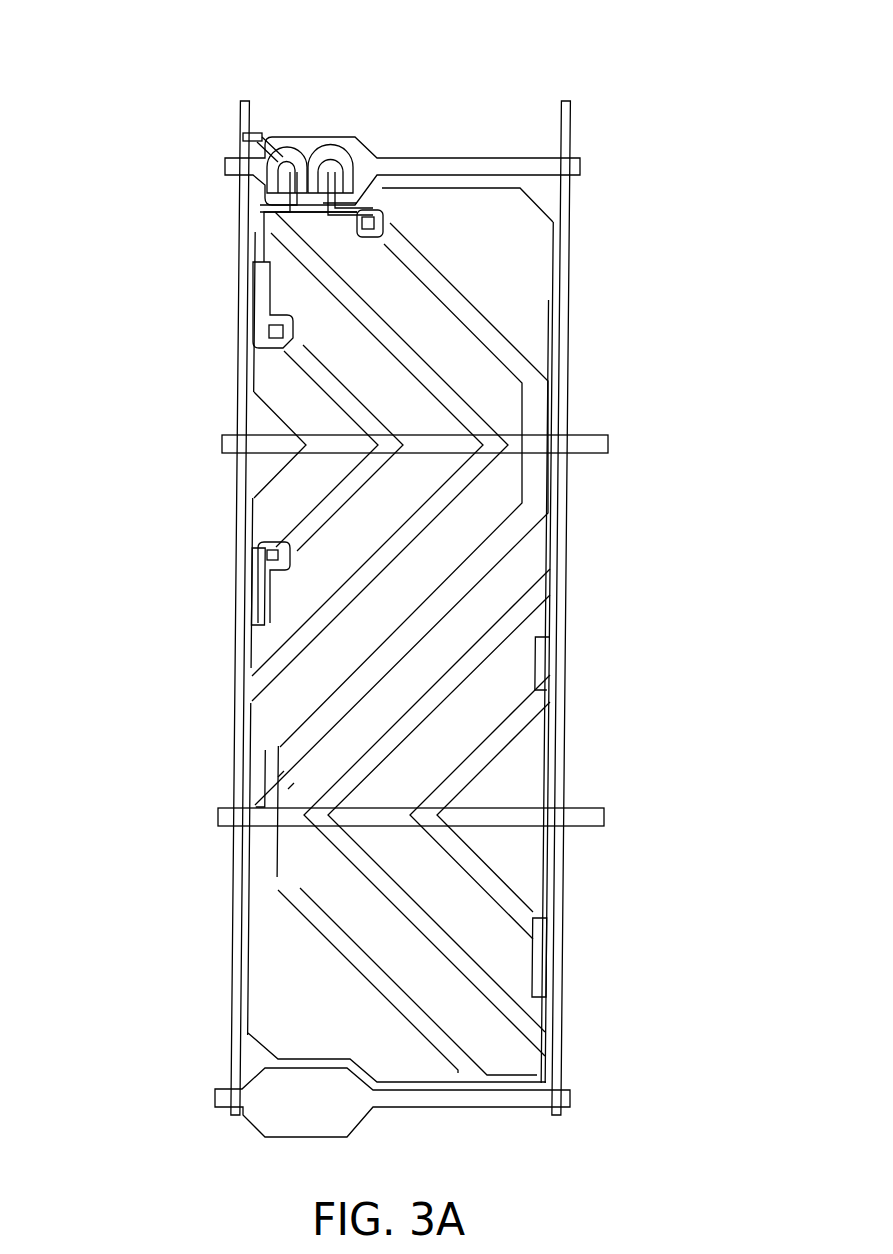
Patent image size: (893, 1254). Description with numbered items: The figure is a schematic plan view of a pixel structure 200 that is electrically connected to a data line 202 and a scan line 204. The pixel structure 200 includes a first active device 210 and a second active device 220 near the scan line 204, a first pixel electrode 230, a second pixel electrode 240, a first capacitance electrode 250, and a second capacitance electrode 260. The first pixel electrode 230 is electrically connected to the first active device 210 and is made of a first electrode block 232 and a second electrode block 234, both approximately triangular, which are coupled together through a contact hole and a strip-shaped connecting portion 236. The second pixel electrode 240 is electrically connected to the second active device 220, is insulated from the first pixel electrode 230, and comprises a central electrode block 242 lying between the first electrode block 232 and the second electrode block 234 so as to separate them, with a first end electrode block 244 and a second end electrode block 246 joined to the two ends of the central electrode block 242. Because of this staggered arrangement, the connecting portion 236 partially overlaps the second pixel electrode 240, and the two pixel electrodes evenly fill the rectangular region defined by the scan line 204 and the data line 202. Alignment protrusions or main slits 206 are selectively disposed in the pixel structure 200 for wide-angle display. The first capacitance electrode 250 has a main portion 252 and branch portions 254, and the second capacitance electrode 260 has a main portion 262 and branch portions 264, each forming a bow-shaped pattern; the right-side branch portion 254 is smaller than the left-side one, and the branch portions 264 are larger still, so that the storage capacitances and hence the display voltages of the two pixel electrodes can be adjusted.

The pixel structure 200 is at (755, 1223).
The data line 202 is at (242, 215).
The scan line 204 is at (470, 163).
The alignment protrusions or main slits 206 is at (517, 913).
The first active device 210 is at (293, 143).
The second active device 220 is at (335, 143).
The first pixel electrode 230 is at (105, 573).
The first electrode block 232 is at (250, 685).
The second electrode block 234 is at (290, 585).
The connecting portion 236 is at (262, 638).
The second pixel electrode 240 is at (728, 441).
The central electrode block 242 is at (482, 612).
The first end electrode block 244 is at (413, 943).
The second end electrode block 246 is at (510, 295).
The first capacitance electrode 250 is at (90, 773).
The main portion 252 is at (227, 822).
The branch portions 254 is at (437, 783).
The second capacitance electrode 260 is at (108, 349).
The main portion 262 is at (227, 437).
The branch portions 264 is at (468, 322).